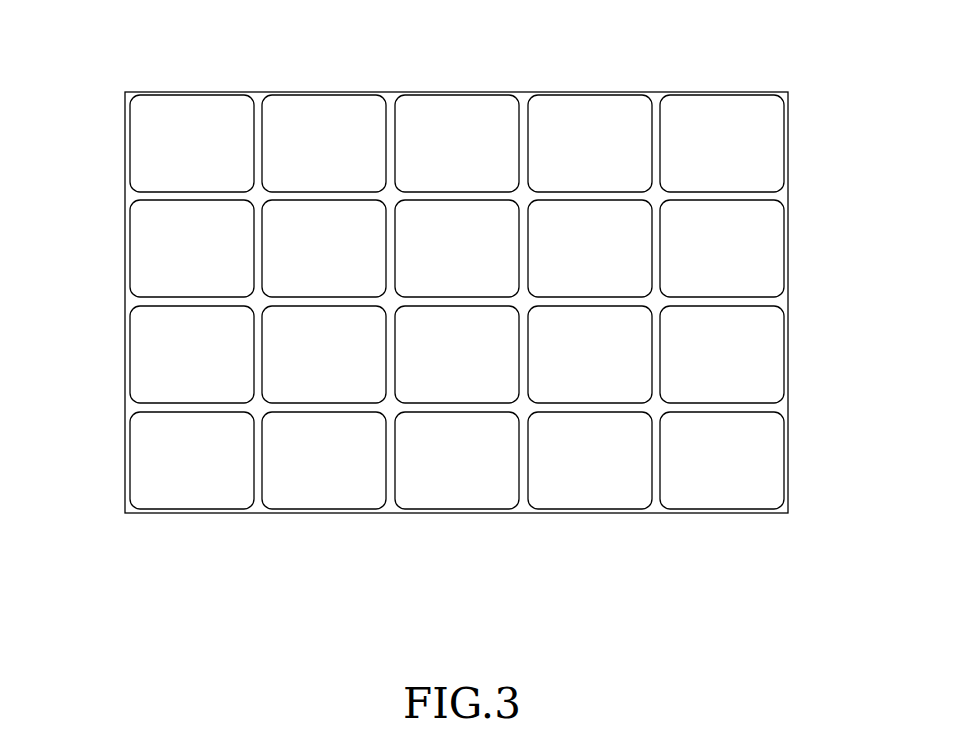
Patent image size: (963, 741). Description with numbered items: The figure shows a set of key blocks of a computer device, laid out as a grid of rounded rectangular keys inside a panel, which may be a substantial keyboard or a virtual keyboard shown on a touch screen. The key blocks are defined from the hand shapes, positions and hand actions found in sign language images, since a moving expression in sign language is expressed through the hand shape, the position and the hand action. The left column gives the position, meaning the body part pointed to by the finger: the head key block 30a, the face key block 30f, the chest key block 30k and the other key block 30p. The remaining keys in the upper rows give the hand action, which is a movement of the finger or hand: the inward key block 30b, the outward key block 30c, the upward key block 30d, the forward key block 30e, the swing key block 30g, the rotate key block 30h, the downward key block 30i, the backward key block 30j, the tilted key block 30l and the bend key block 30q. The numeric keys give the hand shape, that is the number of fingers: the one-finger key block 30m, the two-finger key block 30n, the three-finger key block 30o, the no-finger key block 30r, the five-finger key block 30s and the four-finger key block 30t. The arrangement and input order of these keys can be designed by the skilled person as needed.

The head key block 30a is at (125, 143).
The inward key block 30b is at (305, 92).
The outward key block 30c is at (435, 92).
The upward key block 30d is at (568, 92).
The forward key block 30e is at (788, 142).
The face key block 30f is at (125, 248).
The swing key block 30g is at (367, 208).
The rotate key block 30h is at (500, 208).
The downward key block 30i is at (633, 208).
The backward key block 30j is at (788, 248).
The chest key block 30k is at (125, 353).
The tilted key block 30l is at (297, 398).
The "1" key block 30m is at (432, 398).
The "2" key block 30n is at (565, 398).
The "3" key block 30o is at (788, 353).
The other key block 30p is at (125, 458).
The bend key block 30q is at (345, 508).
The "0" key block 30r is at (478, 508).
The "5" key block 30s is at (612, 508).
The "4" key block 30t is at (788, 458).